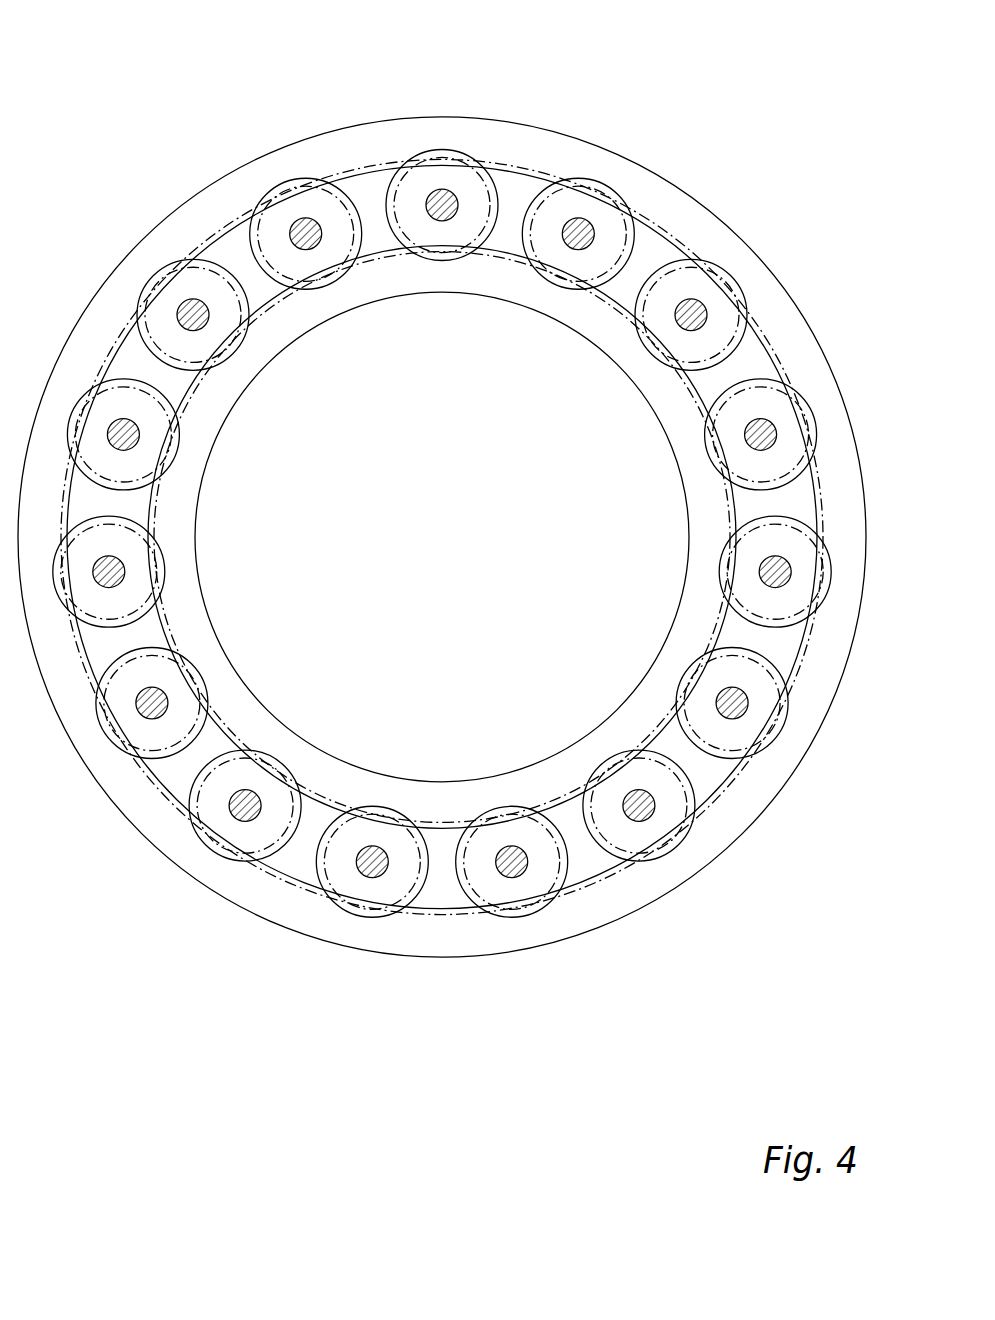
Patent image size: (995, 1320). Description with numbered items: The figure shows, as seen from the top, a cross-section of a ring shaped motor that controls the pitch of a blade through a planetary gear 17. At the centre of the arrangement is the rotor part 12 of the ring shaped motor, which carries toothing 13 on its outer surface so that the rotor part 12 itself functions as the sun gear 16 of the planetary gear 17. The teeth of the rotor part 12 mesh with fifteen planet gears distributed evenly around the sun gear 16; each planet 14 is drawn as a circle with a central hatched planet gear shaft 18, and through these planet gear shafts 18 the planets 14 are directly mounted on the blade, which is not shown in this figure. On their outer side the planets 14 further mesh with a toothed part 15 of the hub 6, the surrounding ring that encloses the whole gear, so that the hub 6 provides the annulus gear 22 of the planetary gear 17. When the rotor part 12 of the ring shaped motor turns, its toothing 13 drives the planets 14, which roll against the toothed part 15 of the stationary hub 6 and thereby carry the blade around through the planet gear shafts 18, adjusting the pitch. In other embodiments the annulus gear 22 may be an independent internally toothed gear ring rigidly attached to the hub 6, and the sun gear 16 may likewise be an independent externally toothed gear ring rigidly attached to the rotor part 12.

The hub 6 is at (350, 135).
The rotor part 12 is at (182, 537).
The toothing 13 is at (257, 309).
The planet 14 is at (263, 832).
The toothed part 15 is at (192, 247).
The sun gear 16 is at (275, 740).
The planetary gear 17 is at (202, 177).
The planet gear shaft 18 is at (443, 200).
The annulus gear 22 is at (683, 203).